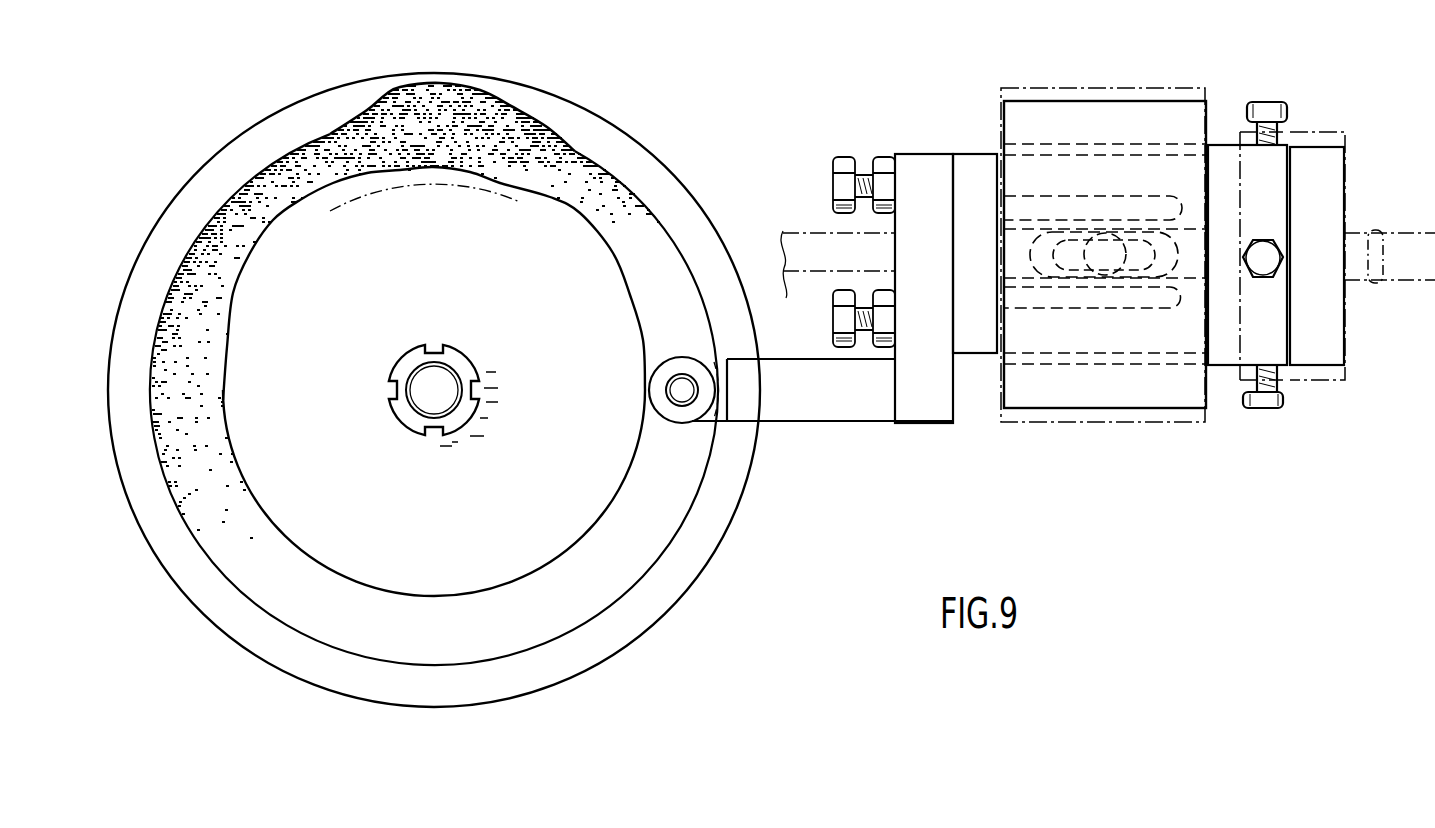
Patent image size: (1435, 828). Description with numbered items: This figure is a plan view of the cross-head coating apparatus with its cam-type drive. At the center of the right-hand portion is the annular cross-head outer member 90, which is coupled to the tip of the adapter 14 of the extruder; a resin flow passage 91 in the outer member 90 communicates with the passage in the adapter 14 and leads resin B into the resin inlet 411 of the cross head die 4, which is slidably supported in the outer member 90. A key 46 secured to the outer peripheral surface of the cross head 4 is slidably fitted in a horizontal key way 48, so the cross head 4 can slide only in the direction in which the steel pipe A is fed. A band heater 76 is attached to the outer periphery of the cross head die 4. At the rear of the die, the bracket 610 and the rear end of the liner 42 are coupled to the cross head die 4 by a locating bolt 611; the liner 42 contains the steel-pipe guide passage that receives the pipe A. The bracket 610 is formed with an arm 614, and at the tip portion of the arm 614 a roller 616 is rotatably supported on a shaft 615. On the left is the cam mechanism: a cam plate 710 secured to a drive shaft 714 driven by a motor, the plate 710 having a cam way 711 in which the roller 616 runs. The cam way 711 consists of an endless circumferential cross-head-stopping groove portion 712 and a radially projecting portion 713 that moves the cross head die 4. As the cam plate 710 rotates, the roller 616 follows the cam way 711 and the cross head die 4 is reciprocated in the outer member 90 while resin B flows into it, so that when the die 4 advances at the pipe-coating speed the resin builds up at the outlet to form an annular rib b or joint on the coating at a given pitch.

The cross head die 4 is at (1216, 145).
The adapter 14 is at (1012, 144).
The liner 42 is at (979, 155).
The key 46 is at (1032, 250).
The key way 48 is at (1190, 235).
The band heater 76 is at (1118, 88).
The cross-head outer member 90 is at (1065, 101).
The resin flow passage 91 is at (1110, 270).
The resin inlet 411 is at (1073, 272).
The bracket 610 is at (918, 155).
The locating bolt 611 is at (833, 170).
The arm 614 is at (740, 421).
The shaft 615 is at (674, 390).
The roller 616 is at (672, 356).
The cam plate 710 is at (700, 570).
The cam way 711 is at (644, 570).
The cross-head-stopping groove portion 712 is at (608, 608).
The projecting portion 713 is at (466, 125).
The drive shaft 714 is at (450, 378).
The steel pipe A is at (832, 274).
The resin B is at (1418, 283).
The annular rib b is at (1372, 284).